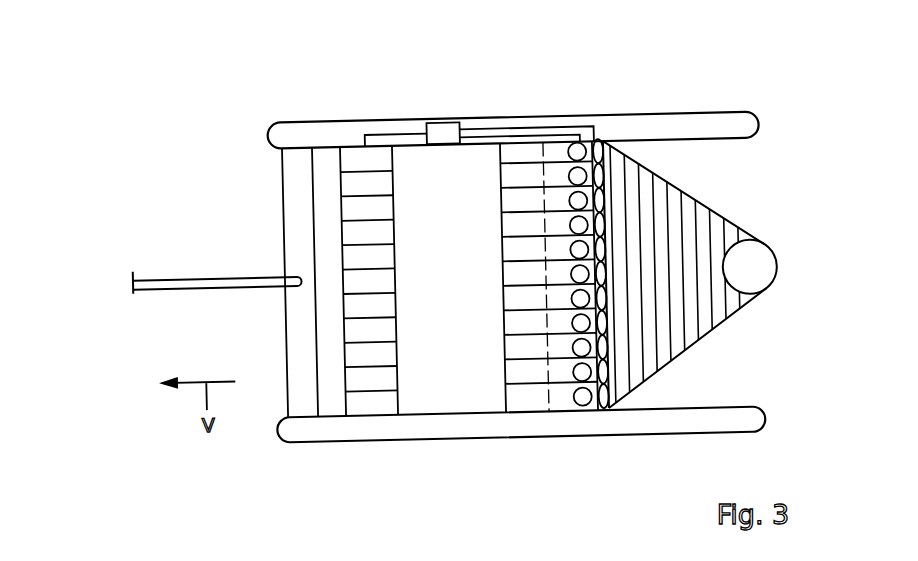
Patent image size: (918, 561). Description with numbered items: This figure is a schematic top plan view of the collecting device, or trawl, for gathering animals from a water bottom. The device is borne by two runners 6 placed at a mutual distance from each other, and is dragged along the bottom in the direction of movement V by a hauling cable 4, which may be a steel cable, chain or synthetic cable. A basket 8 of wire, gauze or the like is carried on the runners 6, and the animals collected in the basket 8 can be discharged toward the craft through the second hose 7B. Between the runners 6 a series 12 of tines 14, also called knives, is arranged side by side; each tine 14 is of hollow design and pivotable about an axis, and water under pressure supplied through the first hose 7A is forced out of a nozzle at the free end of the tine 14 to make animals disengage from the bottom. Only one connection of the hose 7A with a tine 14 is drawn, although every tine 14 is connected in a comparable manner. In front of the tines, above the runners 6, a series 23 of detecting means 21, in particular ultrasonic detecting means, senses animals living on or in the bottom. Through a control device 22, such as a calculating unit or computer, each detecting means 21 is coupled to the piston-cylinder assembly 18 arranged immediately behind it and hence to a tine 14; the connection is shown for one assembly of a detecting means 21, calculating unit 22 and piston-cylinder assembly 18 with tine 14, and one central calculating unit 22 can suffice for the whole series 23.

The hauling cable 4 is at (167, 272).
The supporting means 6 is at (722, 126).
The first hose 7A is at (610, 147).
The second hose 7B is at (762, 276).
The basket 8 is at (691, 213).
The series of tines 12 is at (528, 106).
The tine 14 is at (514, 154).
The piston-cylinder assembly 18 is at (580, 151).
The detecting means 21 is at (358, 154).
The control device 22 is at (446, 128).
The series of detecting means 23 is at (392, 103).